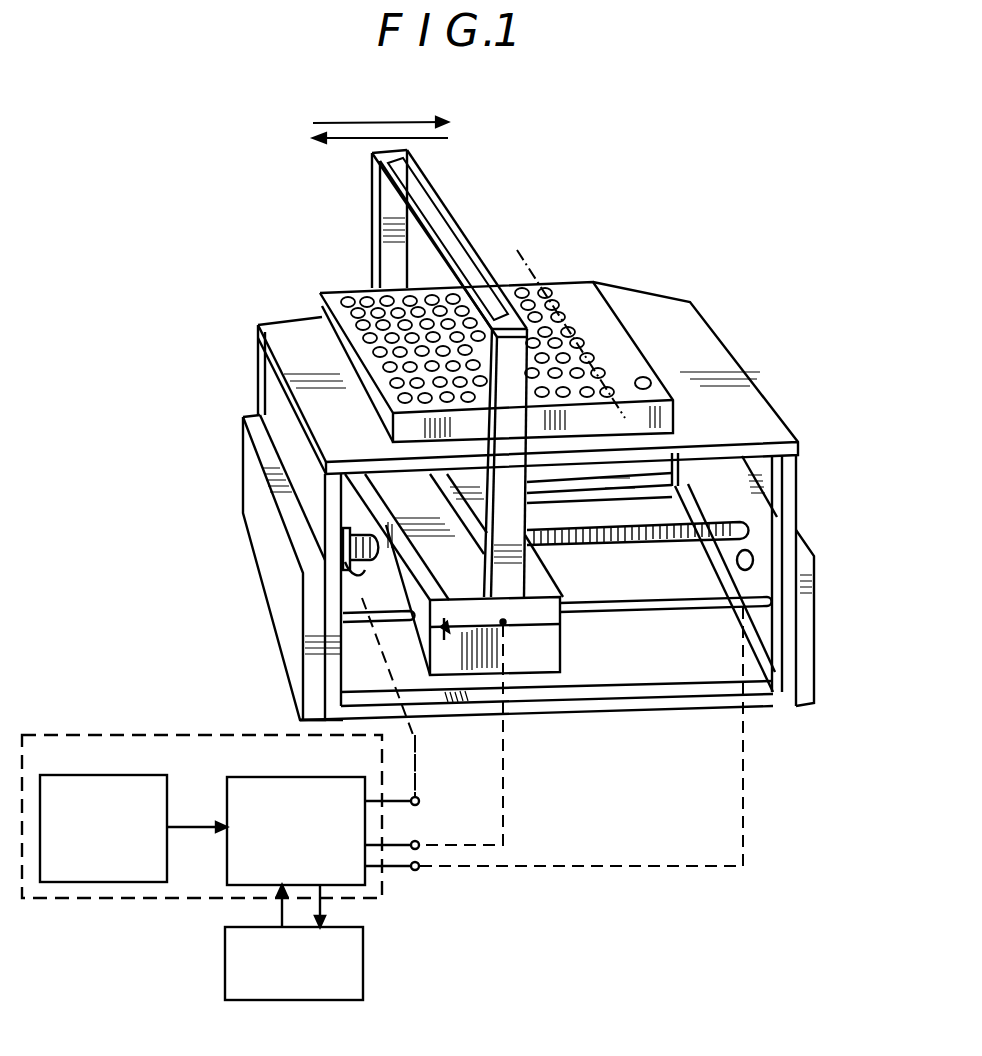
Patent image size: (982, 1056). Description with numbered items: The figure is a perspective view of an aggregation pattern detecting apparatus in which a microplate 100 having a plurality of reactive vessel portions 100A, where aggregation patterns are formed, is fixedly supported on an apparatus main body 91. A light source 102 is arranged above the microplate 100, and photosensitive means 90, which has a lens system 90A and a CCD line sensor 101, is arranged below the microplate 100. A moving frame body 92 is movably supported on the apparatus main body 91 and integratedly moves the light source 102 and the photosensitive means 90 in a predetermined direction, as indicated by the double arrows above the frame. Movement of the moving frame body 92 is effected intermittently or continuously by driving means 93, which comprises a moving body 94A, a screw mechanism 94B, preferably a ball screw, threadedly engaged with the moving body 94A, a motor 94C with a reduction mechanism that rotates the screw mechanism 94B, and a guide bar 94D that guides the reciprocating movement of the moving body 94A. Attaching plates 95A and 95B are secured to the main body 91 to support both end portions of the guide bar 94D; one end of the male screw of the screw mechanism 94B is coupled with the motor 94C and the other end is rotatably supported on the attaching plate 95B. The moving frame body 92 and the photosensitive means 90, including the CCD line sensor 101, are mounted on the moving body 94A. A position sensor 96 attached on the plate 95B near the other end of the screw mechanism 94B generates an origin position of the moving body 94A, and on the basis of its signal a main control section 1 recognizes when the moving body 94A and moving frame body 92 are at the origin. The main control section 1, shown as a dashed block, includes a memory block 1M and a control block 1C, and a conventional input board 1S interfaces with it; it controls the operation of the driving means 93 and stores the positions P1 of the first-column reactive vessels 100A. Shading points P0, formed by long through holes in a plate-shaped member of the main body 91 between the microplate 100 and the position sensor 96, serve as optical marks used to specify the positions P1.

The apparatus main body 91 is at (643, 313).
The moving frame body 92 is at (372, 214).
The light source 102 is at (452, 205).
The microplate 100 is at (345, 290).
The reactive vessel portions 100A is at (322, 300).
The positions of the reactive vessels of the first column P1 is at (520, 250).
The shading points P0 is at (650, 381).
The driving means 93 is at (357, 578).
The moving body 94A is at (562, 656).
The screw mechanism 94B is at (626, 548).
The motor 94C is at (345, 541).
The guide bar 94D is at (664, 612).
The attaching plate 95A is at (281, 637).
The attaching plate 95B is at (815, 576).
The position sensor 96 is at (755, 558).
The photosensitive means 90 is at (445, 626).
The lens system 90A is at (464, 541).
The CCD line sensor 101 is at (523, 613).
The main control section 1 is at (116, 898).
The memory block 1M is at (115, 775).
The control block 1C is at (258, 777).
The input board 1S is at (363, 950).